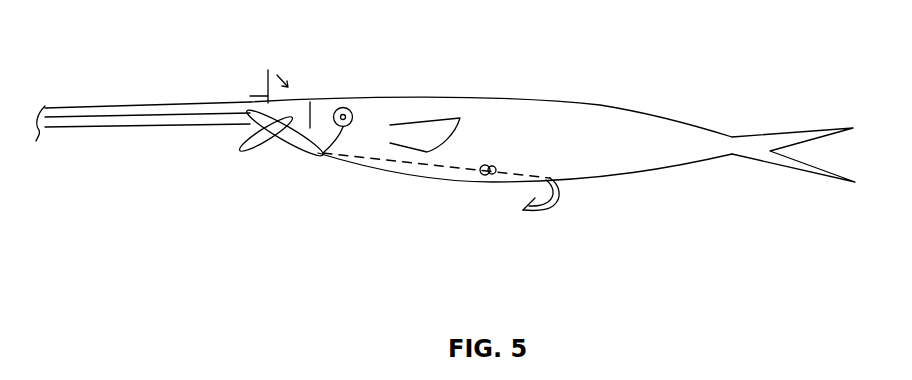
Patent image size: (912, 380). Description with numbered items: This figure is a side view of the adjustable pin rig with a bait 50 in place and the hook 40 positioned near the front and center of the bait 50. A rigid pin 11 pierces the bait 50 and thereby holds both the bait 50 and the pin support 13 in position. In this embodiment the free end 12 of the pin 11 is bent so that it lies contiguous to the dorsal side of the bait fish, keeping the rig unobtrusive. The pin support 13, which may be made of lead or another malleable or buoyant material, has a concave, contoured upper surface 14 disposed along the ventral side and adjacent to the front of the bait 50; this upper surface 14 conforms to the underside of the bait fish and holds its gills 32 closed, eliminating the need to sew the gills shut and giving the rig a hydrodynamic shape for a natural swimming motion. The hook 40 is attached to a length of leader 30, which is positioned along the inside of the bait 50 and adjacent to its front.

The pin 11 is at (250, 96).
The free end 12 is at (268, 72).
The pin support 13 is at (288, 160).
The upper surface 14 is at (257, 130).
The leader 30 is at (135, 127).
The gills 32 is at (340, 137).
The hook 40 is at (560, 194).
The bait 50 is at (600, 105).